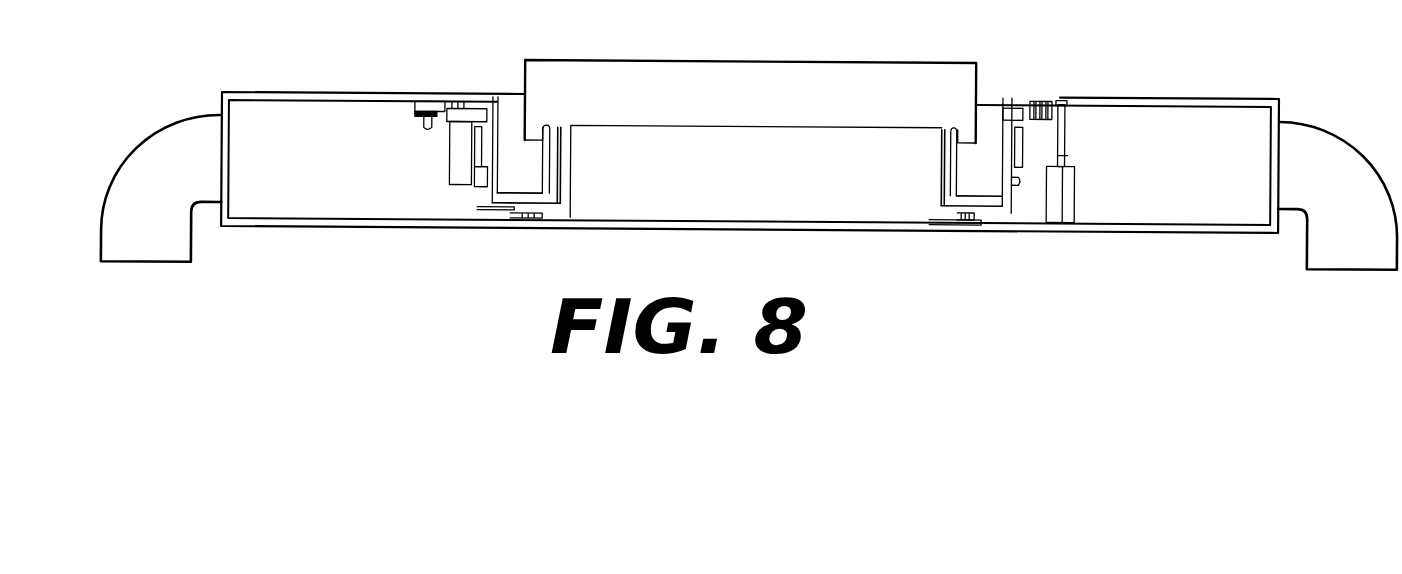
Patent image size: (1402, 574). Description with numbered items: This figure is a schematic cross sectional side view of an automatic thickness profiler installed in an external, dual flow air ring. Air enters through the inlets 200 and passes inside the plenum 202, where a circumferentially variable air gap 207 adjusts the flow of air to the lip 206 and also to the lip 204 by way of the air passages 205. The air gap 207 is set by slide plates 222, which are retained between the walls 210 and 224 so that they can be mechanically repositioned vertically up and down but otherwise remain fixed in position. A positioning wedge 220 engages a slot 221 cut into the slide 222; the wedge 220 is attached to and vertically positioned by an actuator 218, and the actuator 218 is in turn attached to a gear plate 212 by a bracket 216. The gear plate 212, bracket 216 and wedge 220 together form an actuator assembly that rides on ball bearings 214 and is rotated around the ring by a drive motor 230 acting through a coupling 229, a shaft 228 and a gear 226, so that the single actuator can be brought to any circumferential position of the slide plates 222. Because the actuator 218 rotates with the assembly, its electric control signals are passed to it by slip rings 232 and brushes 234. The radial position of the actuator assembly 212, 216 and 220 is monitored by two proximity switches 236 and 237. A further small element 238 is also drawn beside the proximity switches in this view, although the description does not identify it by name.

The inlets 200 is at (152, 131).
The plenum 202 is at (310, 92).
The lip 204 is at (932, 218).
The air passages 205 is at (963, 214).
The lip 206 is at (943, 121).
The air gap 207 is at (473, 212).
The wall 210 is at (497, 150).
The gear plate 212 is at (977, 96).
The ball bearings 214 is at (485, 105).
The bracket 216 is at (447, 120).
The actuator 218 is at (453, 160).
The positioning wedge 220 is at (480, 187).
The slot 221 is at (1015, 176).
The slide plates 222 is at (1027, 195).
The wall 224 is at (1067, 141).
The gear 226 is at (1082, 94).
The shaft 228 is at (1075, 94).
The coupling 229 is at (1068, 150).
The drive motor 230 is at (1075, 188).
The slip rings 232 is at (466, 102).
The brushes 234 is at (1050, 96).
The proximity switch 236 is at (407, 108).
The proximity switch 237 is at (415, 113).
The nub 238 is at (420, 126).